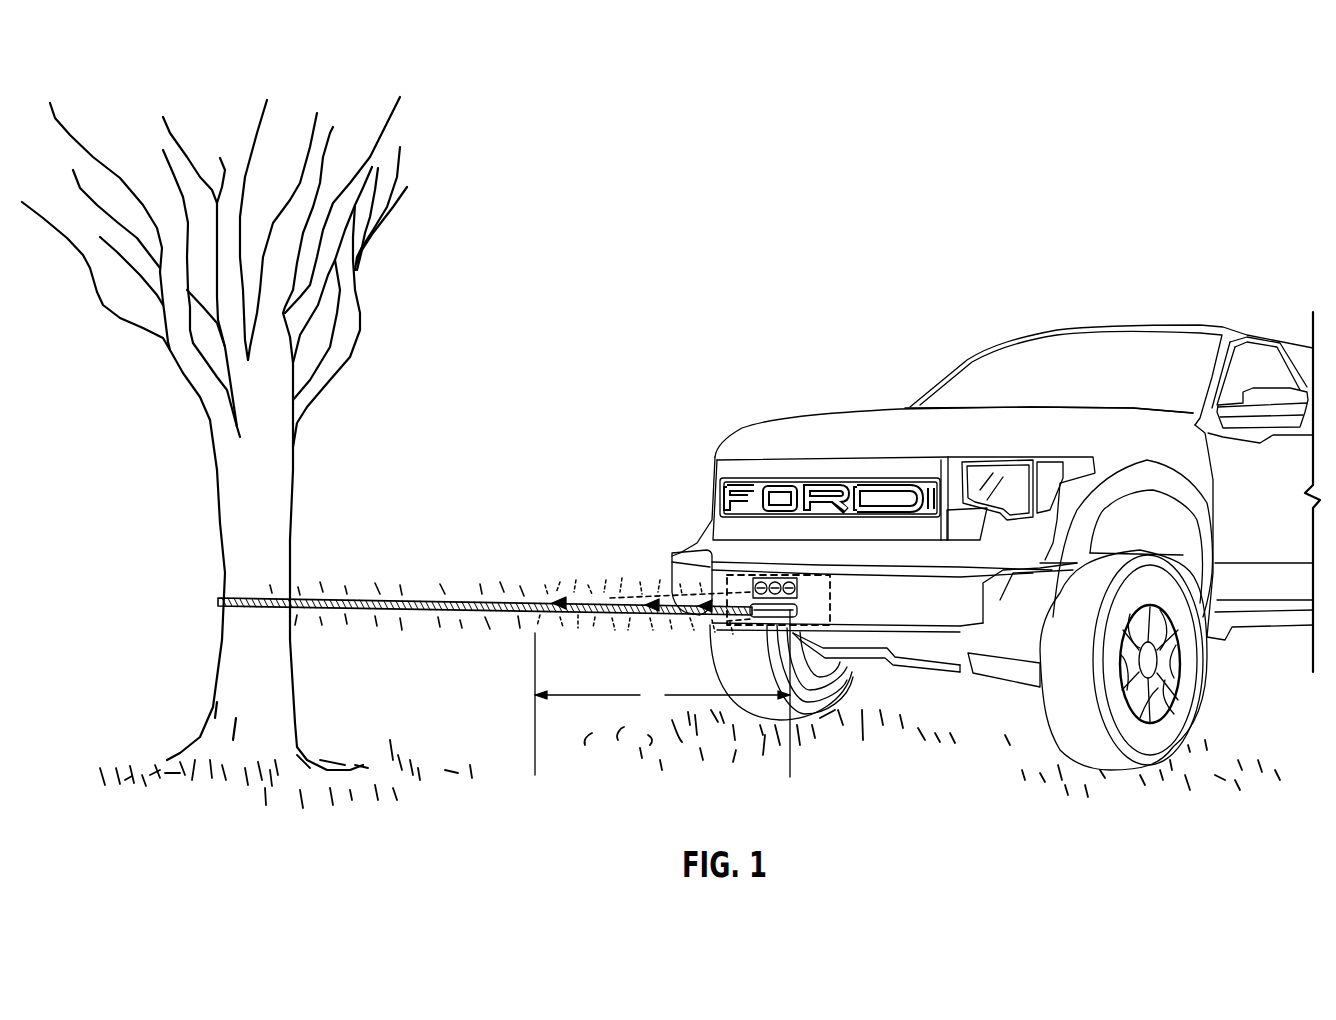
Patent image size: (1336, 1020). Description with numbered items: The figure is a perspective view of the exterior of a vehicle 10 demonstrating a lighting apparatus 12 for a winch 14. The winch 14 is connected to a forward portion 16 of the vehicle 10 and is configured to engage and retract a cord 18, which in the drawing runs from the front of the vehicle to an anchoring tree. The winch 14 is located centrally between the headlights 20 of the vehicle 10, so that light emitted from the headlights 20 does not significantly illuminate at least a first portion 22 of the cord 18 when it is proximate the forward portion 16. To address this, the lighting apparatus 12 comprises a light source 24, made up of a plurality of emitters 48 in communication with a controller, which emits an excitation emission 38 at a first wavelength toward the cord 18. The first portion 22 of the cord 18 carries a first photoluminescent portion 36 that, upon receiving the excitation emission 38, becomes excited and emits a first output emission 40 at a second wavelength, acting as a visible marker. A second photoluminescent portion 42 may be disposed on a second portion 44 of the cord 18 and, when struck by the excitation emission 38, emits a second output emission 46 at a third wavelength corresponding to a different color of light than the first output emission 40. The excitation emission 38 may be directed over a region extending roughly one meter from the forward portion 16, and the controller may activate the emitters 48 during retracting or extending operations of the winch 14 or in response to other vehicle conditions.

The vehicle 10 is at (927, 526).
The lighting apparatus 12 is at (718, 576).
The winch 14 is at (832, 603).
The forward portion 16 is at (703, 457).
The cord 18 is at (485, 551).
The headlights 20 is at (713, 482).
The first portion 22 is at (485, 568).
The first photoluminescent portion 36 is at (413, 598).
The light source 24 is at (818, 576).
The excitation emission 38 is at (702, 604).
The first output emission 40 is at (471, 632).
The second photoluminescent portion 42 is at (635, 623).
The second portion 44 is at (605, 612).
The second output emission 46 is at (557, 580).
The emitters 48 is at (790, 579).